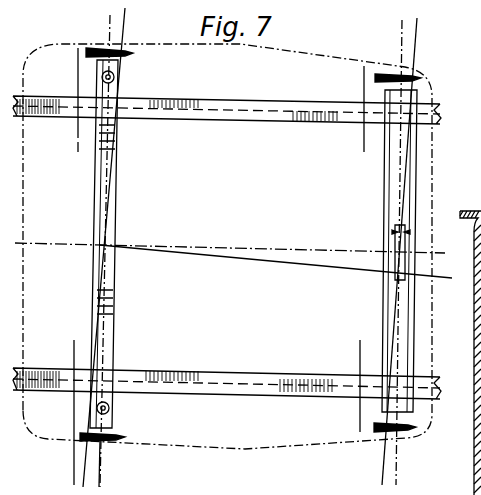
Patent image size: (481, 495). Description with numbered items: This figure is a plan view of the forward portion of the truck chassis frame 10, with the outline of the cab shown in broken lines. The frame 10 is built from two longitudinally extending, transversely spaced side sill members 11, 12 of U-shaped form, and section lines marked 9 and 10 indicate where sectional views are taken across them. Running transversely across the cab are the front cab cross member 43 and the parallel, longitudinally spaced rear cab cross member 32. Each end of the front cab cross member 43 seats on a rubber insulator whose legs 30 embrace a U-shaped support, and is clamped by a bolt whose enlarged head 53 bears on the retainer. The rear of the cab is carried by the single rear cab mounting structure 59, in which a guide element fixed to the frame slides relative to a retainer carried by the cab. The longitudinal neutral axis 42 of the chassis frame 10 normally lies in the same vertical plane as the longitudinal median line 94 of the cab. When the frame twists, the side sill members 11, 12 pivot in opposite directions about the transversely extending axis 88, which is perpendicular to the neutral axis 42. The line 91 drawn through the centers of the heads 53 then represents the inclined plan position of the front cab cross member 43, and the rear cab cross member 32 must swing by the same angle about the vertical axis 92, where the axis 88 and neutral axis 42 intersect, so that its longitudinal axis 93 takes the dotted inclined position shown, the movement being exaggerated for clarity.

The section line 9- 9 is at (86, 52).
The chassis frame 10 is at (375, 78).
The side sill member 11 is at (203, 378).
The side sill member 12 is at (228, 104).
The legs of insulator 30 is at (480, 397).
The rear cab cross member 32 is at (417, 147).
The neutral axis 42 is at (203, 250).
The front cab cross member 43 is at (117, 218).
The enlarged head 53 is at (116, 77).
The rear cab mounting structure 59 is at (410, 231).
The transversely extending axis 88 is at (103, 480).
The line 91 is at (83, 453).
The vertical axis 92 is at (103, 240).
The longitudinal axis of rear cab cross member 93 is at (405, 33).
The longitudinal median line 94 is at (280, 250).